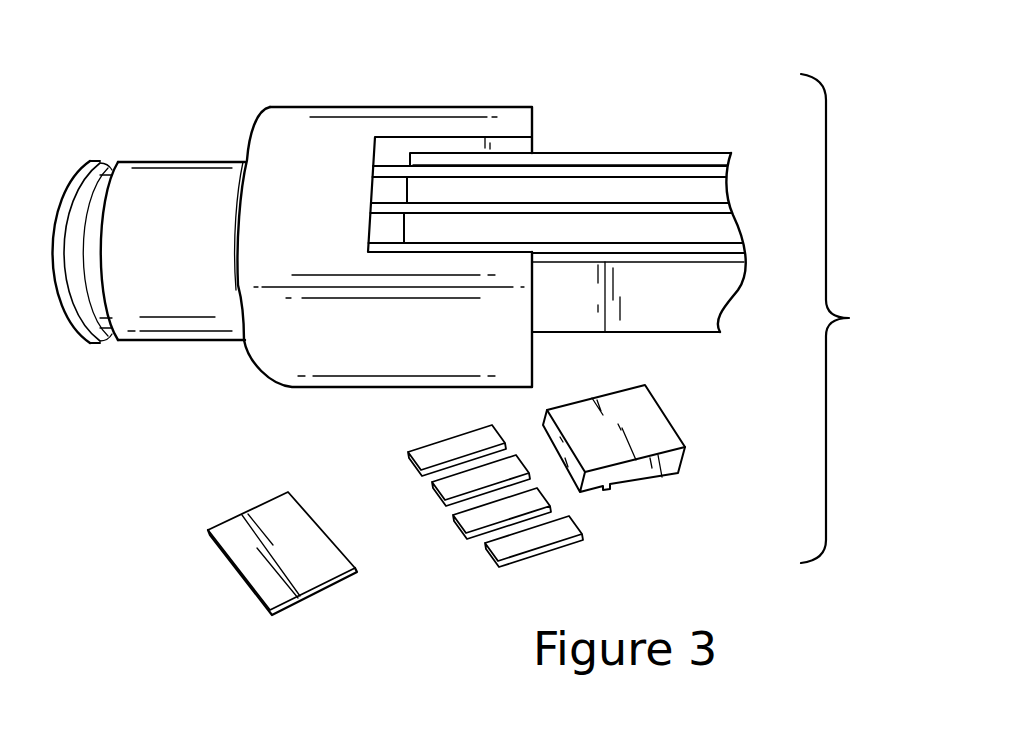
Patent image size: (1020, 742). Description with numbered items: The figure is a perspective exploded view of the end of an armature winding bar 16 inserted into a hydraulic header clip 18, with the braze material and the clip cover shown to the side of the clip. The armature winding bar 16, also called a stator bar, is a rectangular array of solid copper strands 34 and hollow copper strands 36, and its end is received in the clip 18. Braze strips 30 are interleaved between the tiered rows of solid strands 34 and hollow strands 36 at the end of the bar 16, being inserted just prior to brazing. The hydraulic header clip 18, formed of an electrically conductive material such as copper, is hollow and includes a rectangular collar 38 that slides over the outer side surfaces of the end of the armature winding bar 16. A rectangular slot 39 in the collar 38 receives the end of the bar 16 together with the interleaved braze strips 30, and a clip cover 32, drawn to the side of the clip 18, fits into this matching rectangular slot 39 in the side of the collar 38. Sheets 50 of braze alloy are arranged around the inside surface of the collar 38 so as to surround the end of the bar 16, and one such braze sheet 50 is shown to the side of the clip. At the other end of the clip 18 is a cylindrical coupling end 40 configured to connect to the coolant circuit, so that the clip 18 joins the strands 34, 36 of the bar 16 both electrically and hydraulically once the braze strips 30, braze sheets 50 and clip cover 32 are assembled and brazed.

The armature winding bar 16 is at (755, 210).
The hydraulic header clip 18 is at (482, 107).
The braze strips 30 is at (490, 572).
The clip cover 32 is at (670, 440).
The solid copper strands 34 is at (717, 225).
The hollow copper strands 36 is at (722, 170).
The rectangular collar 38 is at (320, 163).
The rectangular slot 39 is at (372, 153).
The cylindrical coupling end 40 is at (185, 295).
The braze sheet 50 is at (270, 522).